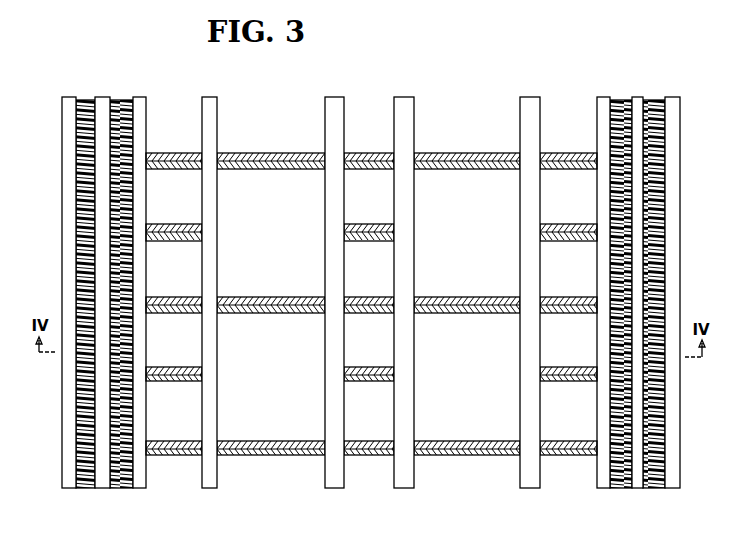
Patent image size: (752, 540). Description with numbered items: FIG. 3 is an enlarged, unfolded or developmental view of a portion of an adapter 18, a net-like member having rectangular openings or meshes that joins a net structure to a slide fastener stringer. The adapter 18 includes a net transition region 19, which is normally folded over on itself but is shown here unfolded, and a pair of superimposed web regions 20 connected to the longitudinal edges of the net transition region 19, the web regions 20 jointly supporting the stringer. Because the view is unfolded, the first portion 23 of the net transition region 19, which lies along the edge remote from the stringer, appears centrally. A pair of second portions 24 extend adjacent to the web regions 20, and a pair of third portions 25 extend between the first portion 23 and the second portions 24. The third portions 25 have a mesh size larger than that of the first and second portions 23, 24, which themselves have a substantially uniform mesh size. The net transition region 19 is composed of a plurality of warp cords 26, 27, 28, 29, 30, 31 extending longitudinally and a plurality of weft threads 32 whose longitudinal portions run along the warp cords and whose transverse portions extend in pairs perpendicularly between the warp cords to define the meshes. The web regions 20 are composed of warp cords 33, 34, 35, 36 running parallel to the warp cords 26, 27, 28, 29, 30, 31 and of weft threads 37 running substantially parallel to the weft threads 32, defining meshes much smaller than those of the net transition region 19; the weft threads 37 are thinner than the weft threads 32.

The adapter 18 is at (690, 248).
The net transition region 19 is at (162, 55).
The web region 20 is at (137, 90).
The first portion 23 is at (405, 90).
The second portion 24 is at (208, 90).
The third portion 25 is at (212, 90).
The warp cord 26 is at (146, 488).
The warp cord 27 is at (209, 490).
The warp cord 28 is at (334, 490).
The warp cord 29 is at (404, 490).
The warp cord 30 is at (530, 490).
The warp cord 31 is at (598, 488).
The weft thread 32 is at (173, 153).
The warp cord 33 is at (62, 488).
The warp cord 34 is at (101, 490).
The warp cord 35 is at (638, 490).
The warp cord 36 is at (677, 488).
The weft thread 37 is at (83, 490).